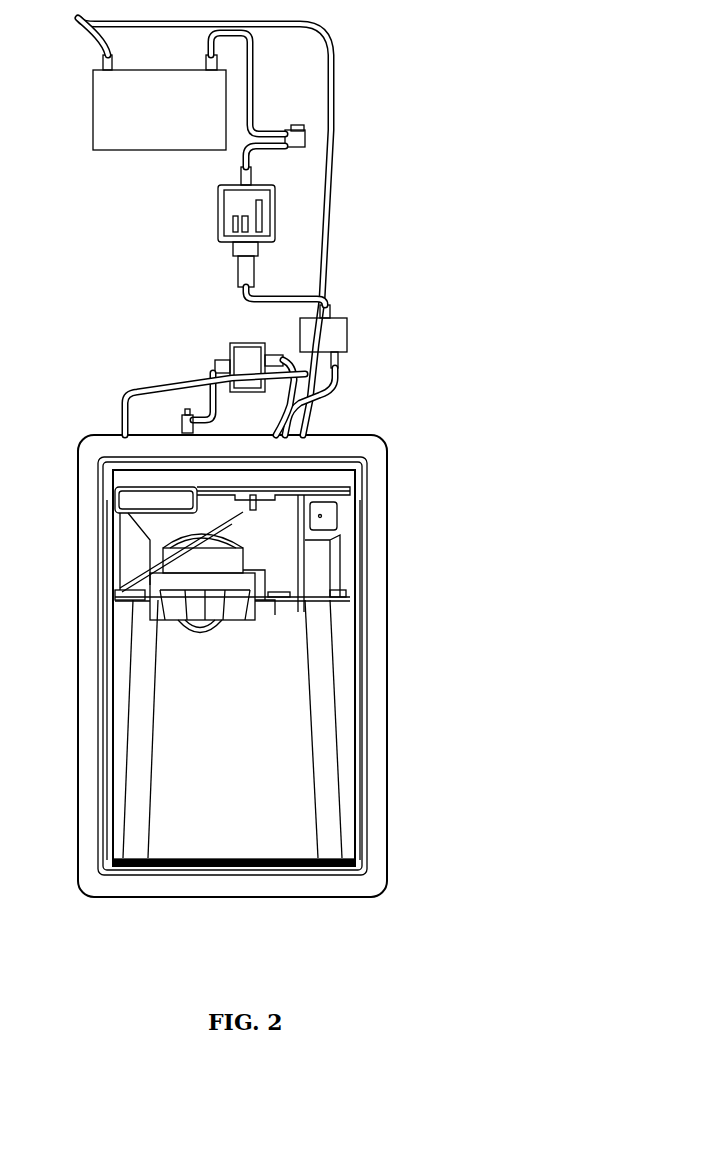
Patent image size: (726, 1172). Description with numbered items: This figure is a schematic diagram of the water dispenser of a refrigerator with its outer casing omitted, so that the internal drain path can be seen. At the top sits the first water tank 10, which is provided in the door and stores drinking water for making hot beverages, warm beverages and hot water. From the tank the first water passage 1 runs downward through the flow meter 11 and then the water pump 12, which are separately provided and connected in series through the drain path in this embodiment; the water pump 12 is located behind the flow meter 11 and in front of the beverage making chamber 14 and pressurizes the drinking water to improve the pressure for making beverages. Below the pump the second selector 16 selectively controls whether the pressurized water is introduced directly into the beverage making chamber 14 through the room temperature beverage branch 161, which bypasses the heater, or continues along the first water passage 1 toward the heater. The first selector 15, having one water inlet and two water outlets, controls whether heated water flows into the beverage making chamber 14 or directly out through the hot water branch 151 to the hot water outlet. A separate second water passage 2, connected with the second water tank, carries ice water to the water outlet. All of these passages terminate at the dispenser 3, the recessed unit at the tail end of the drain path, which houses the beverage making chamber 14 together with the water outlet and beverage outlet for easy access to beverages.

The first water passage 1 is at (80, 37).
The second water passage 2 is at (325, 30).
The dispenser 3 is at (96, 531).
The first water tank 10 is at (116, 128).
The flow meter 11 is at (308, 138).
The water pump 12 is at (228, 208).
The beverage making chamber 14 is at (118, 581).
The first selector 15 is at (243, 357).
The hot water branch 151 is at (284, 356).
The second selector 16 is at (347, 340).
The room temperature beverage branch 161 is at (339, 366).